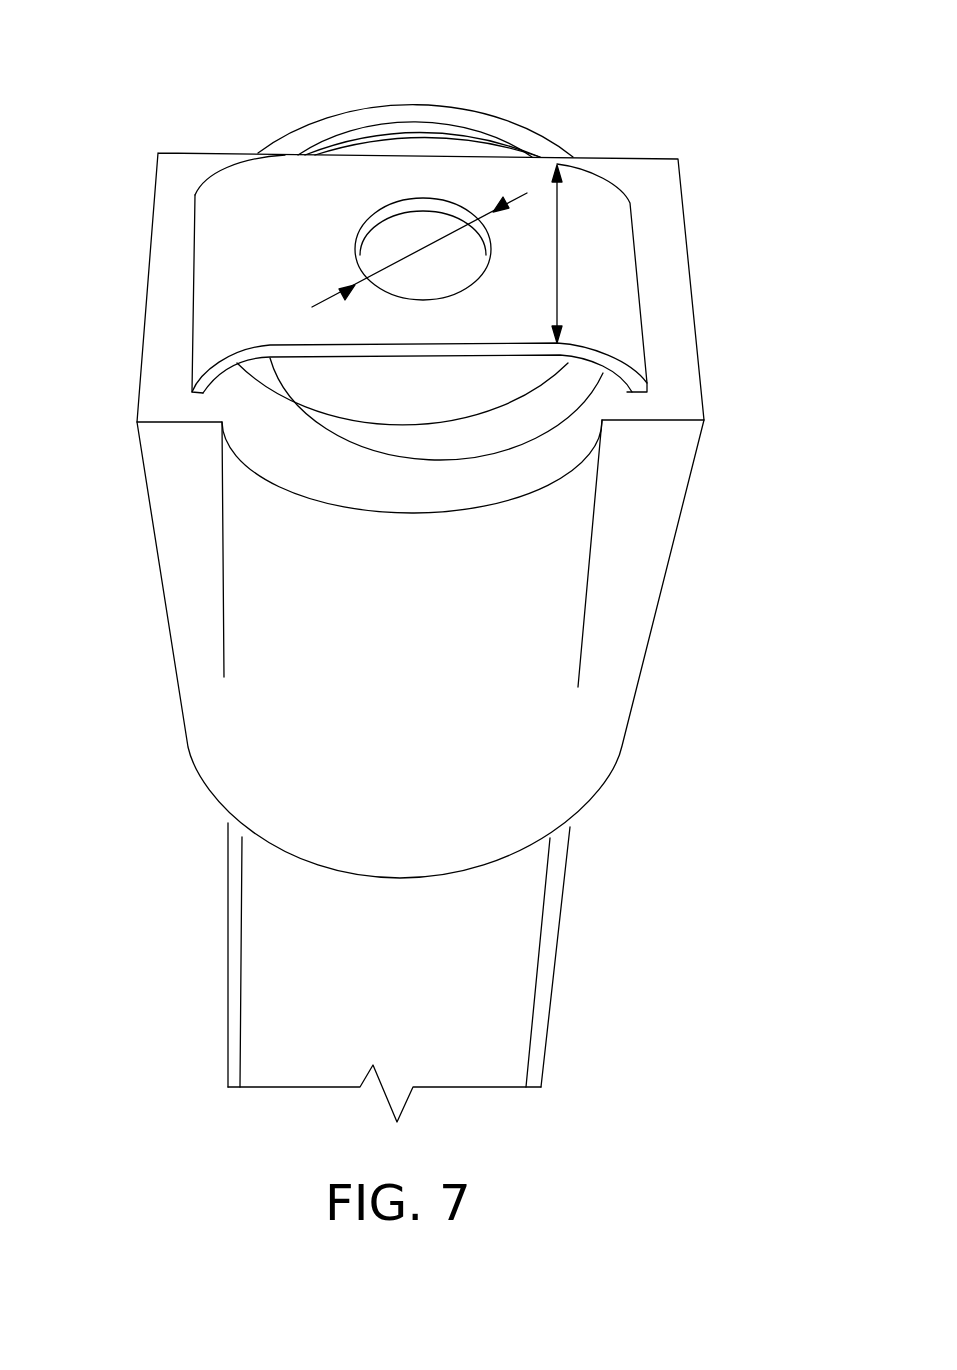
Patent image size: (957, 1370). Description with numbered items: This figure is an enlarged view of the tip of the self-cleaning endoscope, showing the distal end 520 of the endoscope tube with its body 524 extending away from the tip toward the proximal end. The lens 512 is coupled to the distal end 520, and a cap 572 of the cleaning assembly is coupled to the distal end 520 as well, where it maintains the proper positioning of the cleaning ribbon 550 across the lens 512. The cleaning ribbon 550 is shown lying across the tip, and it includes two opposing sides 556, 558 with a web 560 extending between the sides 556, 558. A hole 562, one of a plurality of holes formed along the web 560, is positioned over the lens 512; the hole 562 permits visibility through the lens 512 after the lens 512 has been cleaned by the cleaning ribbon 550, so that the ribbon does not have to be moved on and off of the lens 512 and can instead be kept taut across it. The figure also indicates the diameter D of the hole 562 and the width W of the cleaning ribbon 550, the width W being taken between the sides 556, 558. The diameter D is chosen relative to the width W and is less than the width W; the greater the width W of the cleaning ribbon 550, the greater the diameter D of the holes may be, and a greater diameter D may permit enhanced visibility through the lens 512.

The lens 512 is at (436, 133).
The distal end 520 is at (540, 110).
The body 524 is at (255, 1035).
The cleaning ribbon 550 is at (557, 960).
The side 556 is at (278, 167).
The side 558 is at (217, 370).
The web 560 is at (217, 282).
The hole 562 is at (386, 208).
The cap 572 is at (624, 668).
The diameter D is at (432, 240).
The width W is at (560, 253).